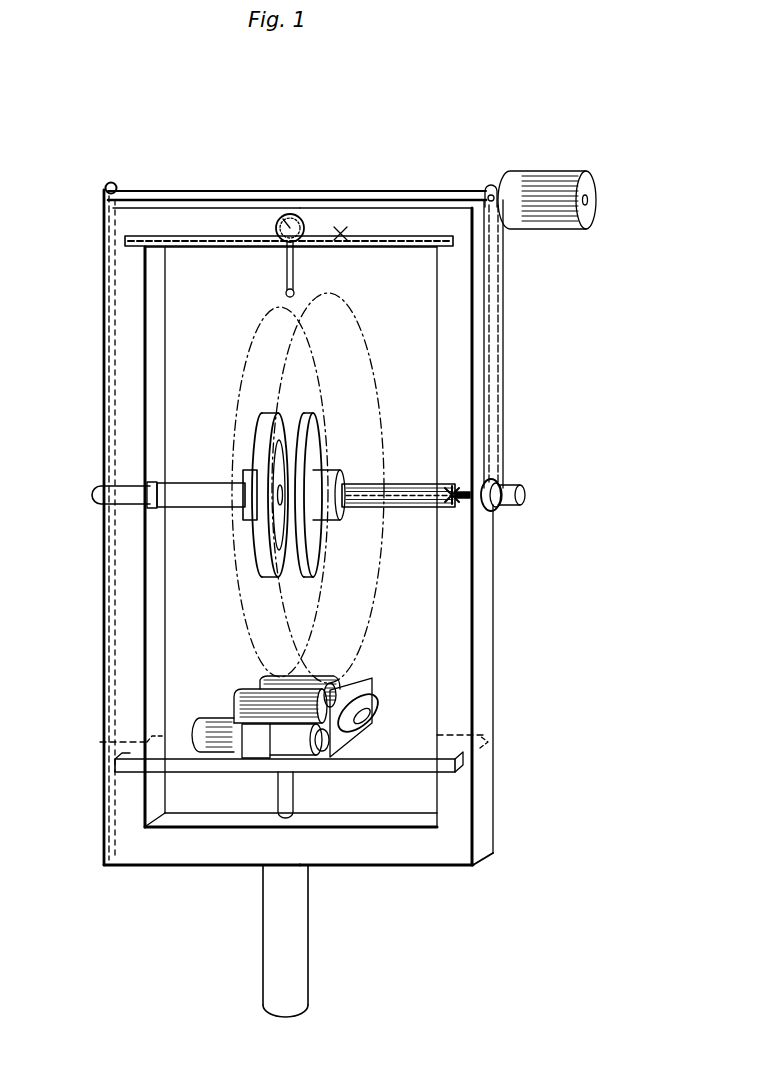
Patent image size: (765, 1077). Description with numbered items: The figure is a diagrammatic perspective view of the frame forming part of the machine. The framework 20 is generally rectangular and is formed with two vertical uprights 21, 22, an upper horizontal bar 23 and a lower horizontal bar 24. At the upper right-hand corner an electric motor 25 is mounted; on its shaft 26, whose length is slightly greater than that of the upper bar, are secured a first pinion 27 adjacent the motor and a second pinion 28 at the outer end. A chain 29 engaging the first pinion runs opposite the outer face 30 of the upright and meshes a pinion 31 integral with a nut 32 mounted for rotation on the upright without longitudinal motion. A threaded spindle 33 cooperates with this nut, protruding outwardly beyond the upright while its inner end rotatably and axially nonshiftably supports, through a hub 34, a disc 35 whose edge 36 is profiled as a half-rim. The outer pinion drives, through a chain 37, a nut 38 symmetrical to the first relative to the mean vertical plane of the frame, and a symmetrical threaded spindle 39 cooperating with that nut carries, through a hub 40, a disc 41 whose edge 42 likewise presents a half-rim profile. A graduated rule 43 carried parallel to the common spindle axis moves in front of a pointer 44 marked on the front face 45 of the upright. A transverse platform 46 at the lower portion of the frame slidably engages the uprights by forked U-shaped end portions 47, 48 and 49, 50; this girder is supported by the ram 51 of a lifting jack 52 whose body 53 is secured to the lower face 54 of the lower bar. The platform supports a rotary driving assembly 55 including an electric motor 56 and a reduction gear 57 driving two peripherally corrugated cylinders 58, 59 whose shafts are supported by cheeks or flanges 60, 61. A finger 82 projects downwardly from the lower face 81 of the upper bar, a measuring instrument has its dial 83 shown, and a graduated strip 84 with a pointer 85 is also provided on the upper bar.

The framework 20 is at (478, 168).
The vertical upright 21 is at (100, 263).
The vertical upright 22 is at (512, 400).
The upper horizontal bar 23 is at (283, 166).
The lower horizontal bar 24 is at (394, 887).
The electric motor 25 is at (548, 180).
The shaft 26 is at (240, 190).
The first pinion 27 is at (497, 190).
The second pinion 28 is at (113, 184).
The chain 29 is at (495, 318).
The outer face 30 is at (480, 618).
The pinion 31 is at (500, 506).
The nut 32 is at (482, 510).
The threaded spindle 33 is at (410, 485).
The hub 34 is at (326, 480).
The disc 35 is at (313, 437).
The edge 36 is at (311, 560).
The chain 37 is at (108, 332).
The nut 38 is at (147, 516).
The threaded spindle 39 is at (200, 500).
The hub 40 is at (248, 520).
The disc 41 is at (262, 552).
The edge 42 is at (273, 570).
The graduated rule 43 is at (393, 499).
The pointer 44 is at (453, 503).
The front face 45 is at (455, 690).
The transverse platform 46 is at (399, 768).
The forked U-shaped end portion 47 is at (482, 750).
The forked U-shaped end portion 48 is at (470, 787).
The forked U-shaped end portion 49 is at (100, 742).
The forked U-shaped end portion 50 is at (117, 765).
The ram 51 is at (285, 783).
The lifting jack 52 is at (250, 880).
The body 53 is at (279, 983).
The lower face 54 is at (172, 868).
The rotary driving assembly 55 is at (386, 708).
The electric motor 56 is at (221, 728).
The reduction gear 57 is at (301, 741).
The peripherally corrugated cylinder 58 is at (248, 695).
The peripherally corrugated cylinder 59 is at (316, 678).
The cheek or flange 60 is at (245, 756).
The cheek or flange 61 is at (349, 737).
The lower face 81 is at (206, 249).
The finger 82 is at (289, 297).
The dial 83 is at (276, 238).
The graduated strip 84 is at (394, 247).
The pointer 85 is at (343, 240).